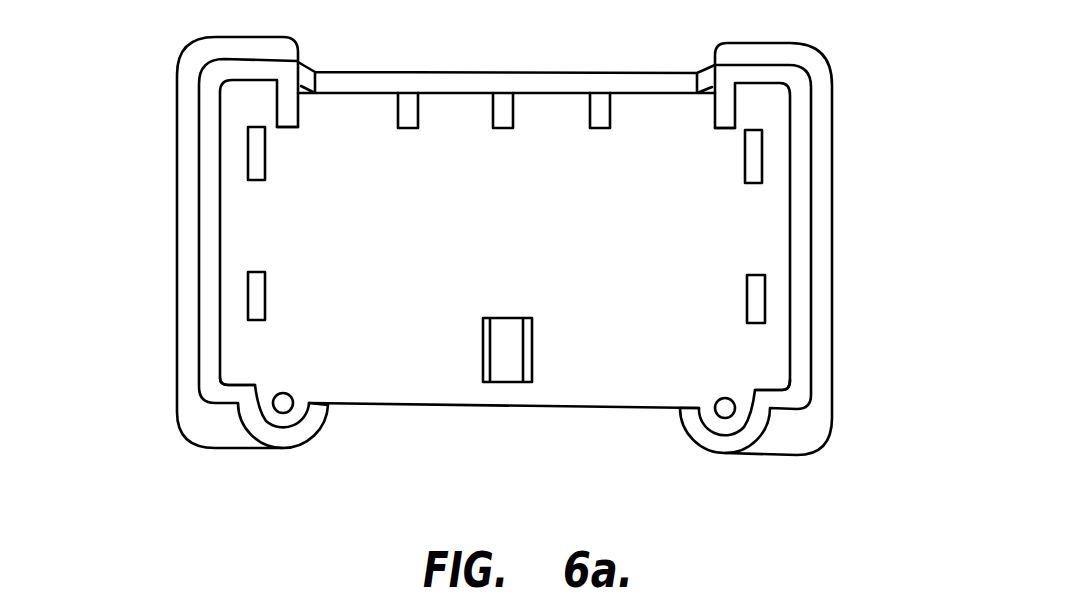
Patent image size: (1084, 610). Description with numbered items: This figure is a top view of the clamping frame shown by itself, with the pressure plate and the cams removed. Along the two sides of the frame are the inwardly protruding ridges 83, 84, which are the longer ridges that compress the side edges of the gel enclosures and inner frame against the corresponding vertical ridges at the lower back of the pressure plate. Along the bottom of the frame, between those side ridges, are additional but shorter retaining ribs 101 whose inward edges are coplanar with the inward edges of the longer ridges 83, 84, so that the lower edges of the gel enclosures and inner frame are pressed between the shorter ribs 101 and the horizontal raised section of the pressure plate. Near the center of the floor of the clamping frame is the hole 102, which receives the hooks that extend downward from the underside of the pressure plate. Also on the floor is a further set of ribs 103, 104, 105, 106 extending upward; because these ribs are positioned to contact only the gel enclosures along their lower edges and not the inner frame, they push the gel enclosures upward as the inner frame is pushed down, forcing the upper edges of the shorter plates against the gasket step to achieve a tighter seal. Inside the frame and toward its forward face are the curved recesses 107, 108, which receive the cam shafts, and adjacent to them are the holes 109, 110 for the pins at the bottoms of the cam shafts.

The inwardly protruding ridge 83 is at (286, 128).
The inwardly protruding ridge 84 is at (728, 128).
The retaining ribs 101 is at (617, 152).
The hole 102 is at (503, 340).
The rib 103 is at (257, 181).
The rib 104 is at (265, 302).
The rib 105 is at (753, 184).
The rib 106 is at (747, 317).
The curved recess 107 is at (267, 384).
The curved recess 108 is at (745, 386).
The hole 109 is at (283, 403).
The hole 110 is at (725, 408).